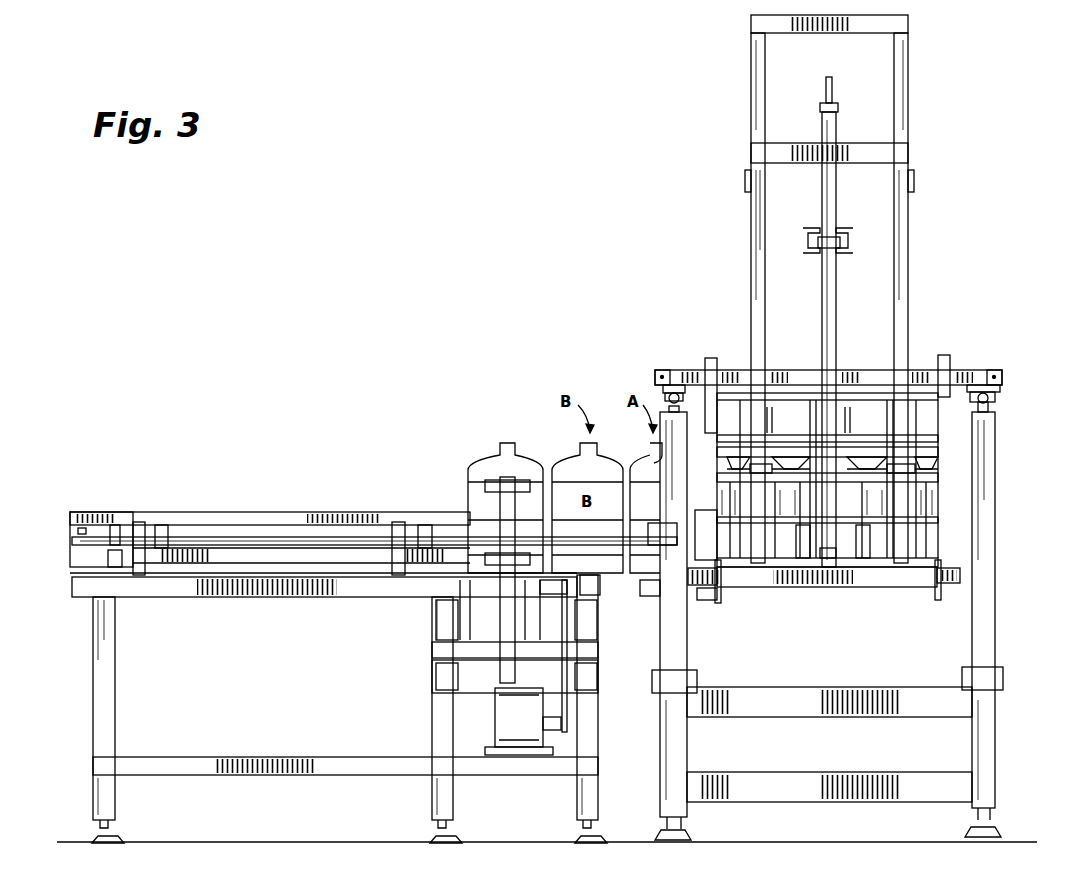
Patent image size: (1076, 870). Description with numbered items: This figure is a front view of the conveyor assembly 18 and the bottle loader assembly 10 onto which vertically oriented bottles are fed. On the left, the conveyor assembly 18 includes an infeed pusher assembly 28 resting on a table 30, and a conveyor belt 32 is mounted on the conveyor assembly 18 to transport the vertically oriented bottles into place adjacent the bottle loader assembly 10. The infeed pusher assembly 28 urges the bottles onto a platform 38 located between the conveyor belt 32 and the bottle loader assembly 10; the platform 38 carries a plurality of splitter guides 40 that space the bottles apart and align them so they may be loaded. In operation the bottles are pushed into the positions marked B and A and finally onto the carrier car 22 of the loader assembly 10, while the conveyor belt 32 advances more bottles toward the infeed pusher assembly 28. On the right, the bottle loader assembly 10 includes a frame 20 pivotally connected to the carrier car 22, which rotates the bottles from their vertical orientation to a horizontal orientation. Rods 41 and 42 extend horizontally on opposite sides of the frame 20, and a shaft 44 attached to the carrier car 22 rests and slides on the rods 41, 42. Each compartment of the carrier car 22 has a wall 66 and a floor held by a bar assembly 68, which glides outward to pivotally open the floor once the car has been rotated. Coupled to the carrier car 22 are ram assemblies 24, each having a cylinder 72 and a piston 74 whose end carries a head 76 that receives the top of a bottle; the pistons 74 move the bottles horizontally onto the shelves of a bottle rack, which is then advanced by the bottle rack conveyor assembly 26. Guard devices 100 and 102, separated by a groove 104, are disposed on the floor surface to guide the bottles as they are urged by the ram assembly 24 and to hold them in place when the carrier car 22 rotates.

The bottle loader assembly 10 is at (649, 320).
The conveyor assembly 18 is at (608, 605).
The frame 20 is at (1000, 418).
The carrier car 22 is at (926, 593).
The ram assembly 24 is at (840, 296).
The bottle rack conveyor assembly 26 is at (940, 439).
The infeed pusher assembly 28 is at (233, 512).
The table 30 is at (102, 657).
The conveyor belt 32 is at (662, 588).
The platform 38 is at (626, 562).
The splitter guides 40 is at (722, 590).
The rod 41 is at (673, 387).
The rod 42 is at (998, 387).
The shaft 44 is at (920, 368).
The wall 66 is at (940, 471).
The bar assembly 68 is at (723, 572).
The cylinder 72 is at (902, 303).
The piston 74 is at (832, 98).
The head 76 is at (726, 410).
The guard device 100 is at (803, 543).
The guard device 102 is at (860, 543).
The groove 104 is at (826, 563).